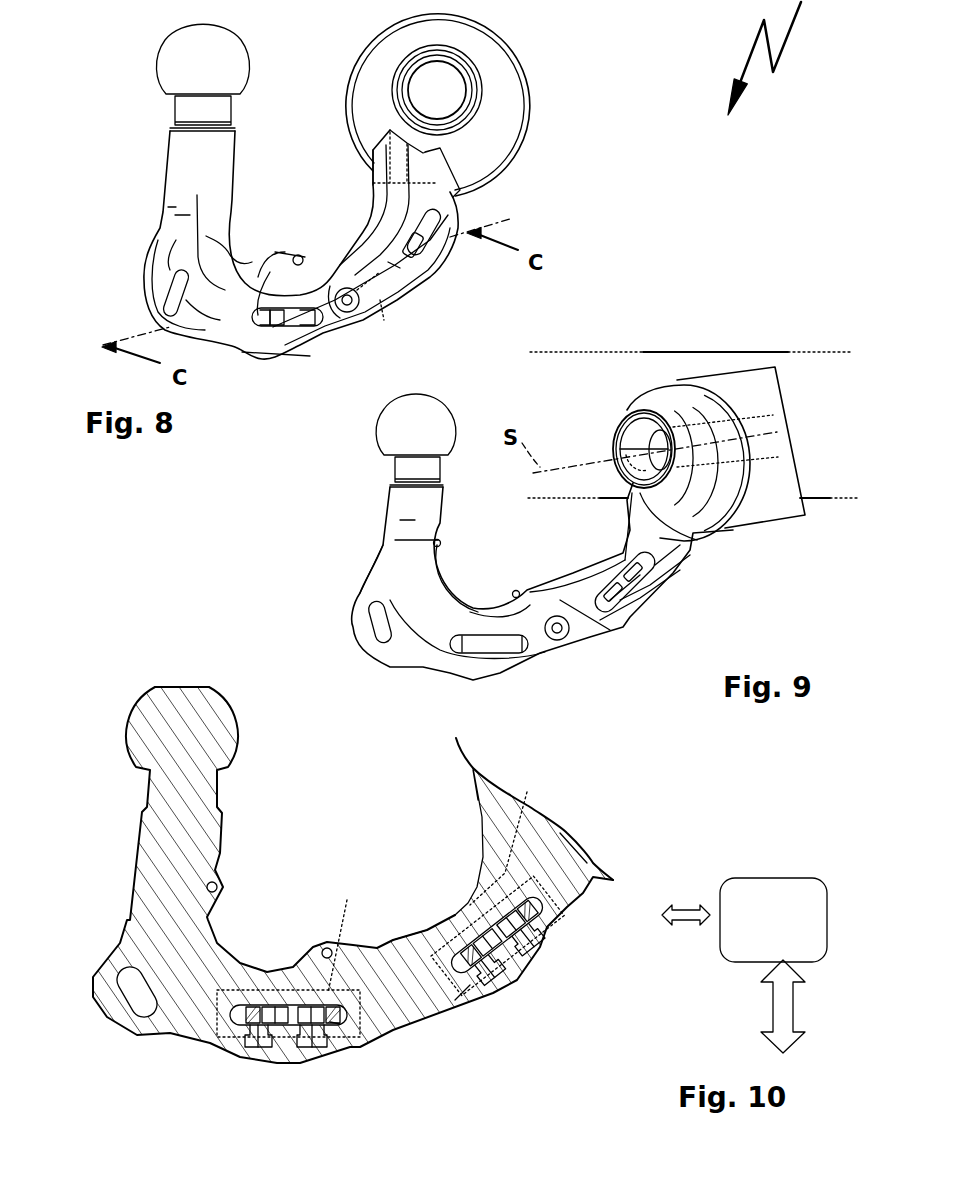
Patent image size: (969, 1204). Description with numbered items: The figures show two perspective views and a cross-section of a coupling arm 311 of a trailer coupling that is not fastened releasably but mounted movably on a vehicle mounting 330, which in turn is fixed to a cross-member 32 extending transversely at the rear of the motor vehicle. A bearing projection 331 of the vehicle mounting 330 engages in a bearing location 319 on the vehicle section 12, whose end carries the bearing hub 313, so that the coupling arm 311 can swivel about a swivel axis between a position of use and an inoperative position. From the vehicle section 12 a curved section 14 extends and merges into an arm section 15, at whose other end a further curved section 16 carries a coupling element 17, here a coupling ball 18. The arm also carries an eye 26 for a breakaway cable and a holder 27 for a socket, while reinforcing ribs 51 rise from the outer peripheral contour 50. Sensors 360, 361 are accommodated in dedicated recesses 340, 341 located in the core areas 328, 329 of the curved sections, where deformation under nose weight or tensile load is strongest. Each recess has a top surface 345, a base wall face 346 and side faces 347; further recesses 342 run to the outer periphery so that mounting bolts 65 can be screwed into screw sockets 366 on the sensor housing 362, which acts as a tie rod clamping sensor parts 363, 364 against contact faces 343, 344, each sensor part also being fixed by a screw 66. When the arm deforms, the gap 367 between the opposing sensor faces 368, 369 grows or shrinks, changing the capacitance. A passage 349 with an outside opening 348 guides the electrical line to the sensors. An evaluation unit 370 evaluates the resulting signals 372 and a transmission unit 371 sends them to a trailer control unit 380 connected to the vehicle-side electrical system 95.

In FIG. 8, the coupling arm 311 is at (160, 170).
In FIG. 9, the coupling arm 311 is at (622, 650).
In FIG. 10, the coupling arm 311 is at (133, 856).
In FIG. 8, the bearing hub 313 is at (513, 107).
In FIG. 8, the vehicle section 12 is at (370, 186).
In FIG. 8, the eye 26 is at (178, 315).
In FIG. 8, the recess 340 is at (282, 320).
In FIG. 9, the recess 340 is at (524, 648).
In FIG. 8, the top surface 345 is at (260, 318).
In FIG. 8, the base wall face 346 is at (272, 323).
In FIG. 8, the side faces 347 is at (312, 318).
In FIG. 8, the opening 348 is at (352, 306).
In FIG. 8, the passage 349 is at (359, 290).
In FIG. 8, the recess 341 is at (406, 258).
In FIG. 9, the recess 341 is at (660, 560).
In FIG. 8, the further recesses 342 is at (412, 237).
In FIG. 10, the further recesses 342 is at (255, 1057).
In FIG. 9, the coupling ball 18 is at (390, 430).
In FIG. 10, the coupling element 17 is at (217, 705).
In FIG. 9, the outer peripheral contour 50 is at (392, 573).
In FIG. 9, the curved section 16 is at (417, 622).
In FIG. 10, the curved section 16 is at (137, 992).
In FIG. 9, the holder 27 is at (516, 592).
In FIG. 9, the sensor 360 is at (477, 648).
In FIG. 10, the sensor 360 is at (347, 1020).
In FIG. 9, the reinforcing ribs 51 is at (570, 597).
In FIG. 9, the evaluation unit 370 is at (610, 593).
In FIG. 9, the transmission unit 371 is at (632, 570).
In FIG. 9, the sensor 361 is at (637, 585).
In FIG. 10, the sensor 361 is at (487, 940).
In FIG. 9, the curved section 14 is at (688, 552).
In FIG. 10, the curved section 14 is at (570, 897).
In FIG. 9, the bearing location 319 is at (628, 453).
In FIG. 9, the bearing projection 331 is at (645, 437).
In FIG. 9, the vehicle mounting 330 is at (748, 365).
In FIG. 9, the cross-member 32 is at (673, 363).
In FIG. 10, the arm section 15 is at (393, 950).
In FIG. 10, the core area 328 is at (351, 923).
In FIG. 10, the core area 329 is at (513, 833).
In FIG. 10, the sensor part 363 is at (252, 1027).
In FIG. 10, the sensor part 364 is at (333, 1022).
In FIG. 10, the gap 367 is at (280, 1027).
In FIG. 10, the sensor face 368 is at (290, 1007).
In FIG. 10, the sensor face 369 is at (287, 1010).
In FIG. 10, the contact face 343 is at (283, 1030).
In FIG. 10, the contact face 344 is at (307, 1027).
In FIG. 10, the sensor housing 362 is at (487, 957).
In FIG. 10, the screw sockets 366 is at (500, 915).
In FIG. 10, the mounting bolts 65 is at (547, 973).
In FIG. 10, the screw 66 is at (477, 973).
In FIG. 10, the trailer control unit 380 is at (762, 872).
In FIG. 10, the signals 372 is at (688, 907).
In FIG. 10, the vehicle-side electrical system 95 is at (778, 1010).